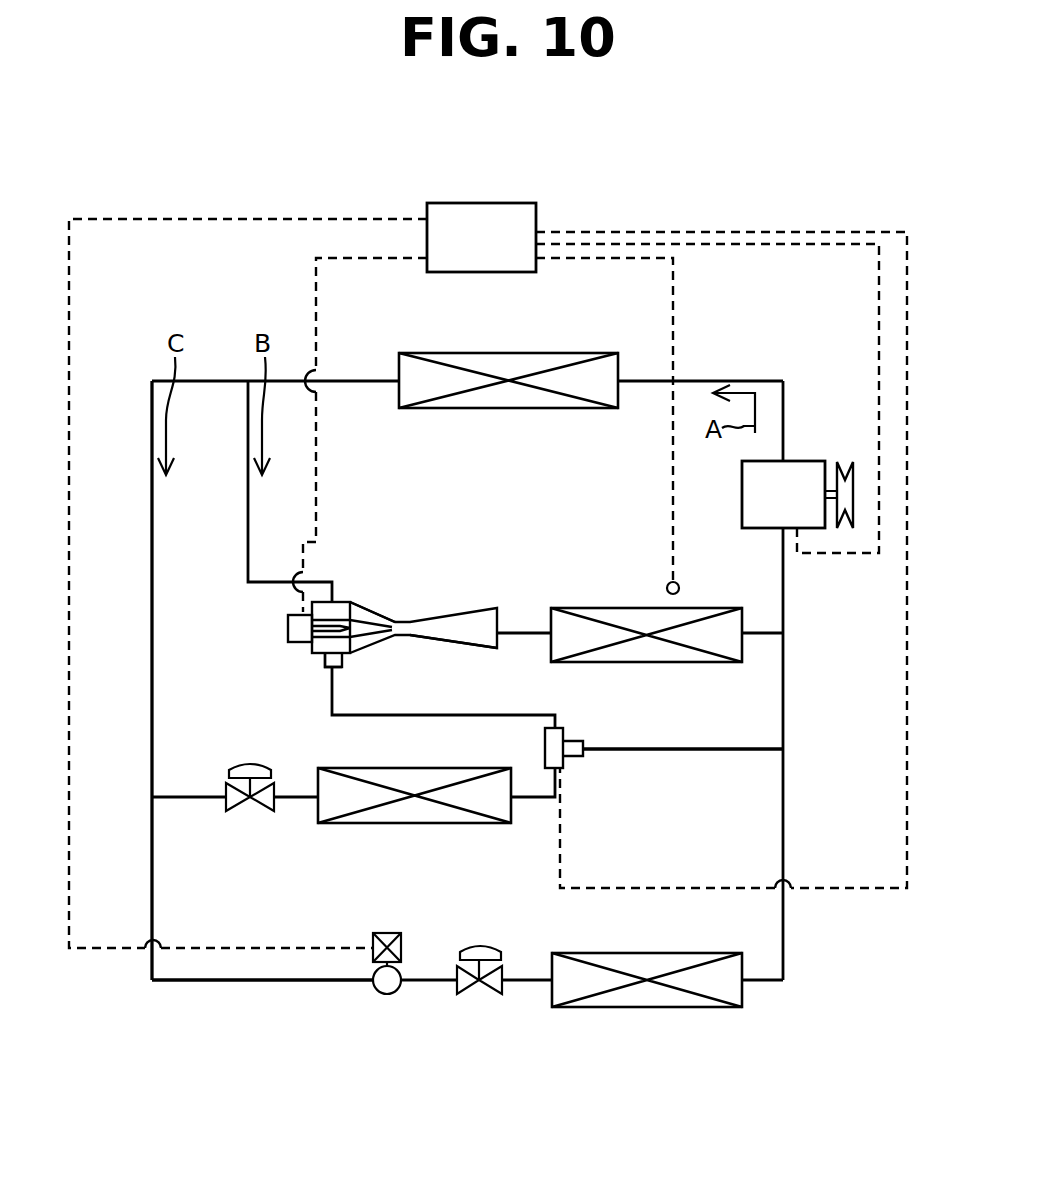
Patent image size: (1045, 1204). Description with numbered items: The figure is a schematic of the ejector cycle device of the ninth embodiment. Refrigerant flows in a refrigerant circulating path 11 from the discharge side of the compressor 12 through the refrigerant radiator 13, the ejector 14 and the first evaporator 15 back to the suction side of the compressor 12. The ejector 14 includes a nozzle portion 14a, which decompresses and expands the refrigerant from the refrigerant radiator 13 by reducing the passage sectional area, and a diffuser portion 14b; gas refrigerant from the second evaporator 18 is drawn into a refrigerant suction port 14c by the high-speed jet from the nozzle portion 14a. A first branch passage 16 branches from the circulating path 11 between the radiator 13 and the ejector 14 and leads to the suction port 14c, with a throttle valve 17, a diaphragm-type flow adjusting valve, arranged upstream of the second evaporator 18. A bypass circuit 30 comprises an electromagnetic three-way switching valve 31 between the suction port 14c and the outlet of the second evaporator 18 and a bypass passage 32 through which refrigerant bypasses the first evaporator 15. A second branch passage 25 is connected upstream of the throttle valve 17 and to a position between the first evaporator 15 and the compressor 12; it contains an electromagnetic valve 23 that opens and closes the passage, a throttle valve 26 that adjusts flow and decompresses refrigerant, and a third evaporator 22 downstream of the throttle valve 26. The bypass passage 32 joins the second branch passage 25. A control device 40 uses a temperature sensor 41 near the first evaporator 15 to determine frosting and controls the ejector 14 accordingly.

The control device 40 is at (498, 203).
The refrigerant radiator 13 is at (505, 353).
The compressor 12 is at (800, 461).
The temperature sensor 41 is at (680, 585).
The first evaporator 15 is at (614, 608).
The ejector 14 is at (420, 604).
The nozzle portion 14a is at (356, 620).
The diffuser portion 14b is at (462, 646).
The refrigerant suction port 14c is at (344, 660).
The refrigerant circulating path 11 is at (248, 552).
The first branch passage 16 is at (152, 594).
The throttle valve 17 is at (245, 811).
The second evaporator 18 is at (420, 823).
The bypass circuit 30 is at (664, 795).
The electromagnetic three-way switching valve 31 is at (566, 770).
The bypass passage 32 is at (592, 806).
The second branch passage 25 is at (250, 981).
The electromagnetic valve 23 is at (385, 995).
The throttle valve 26 is at (481, 994).
The third evaporator 22 is at (646, 1007).